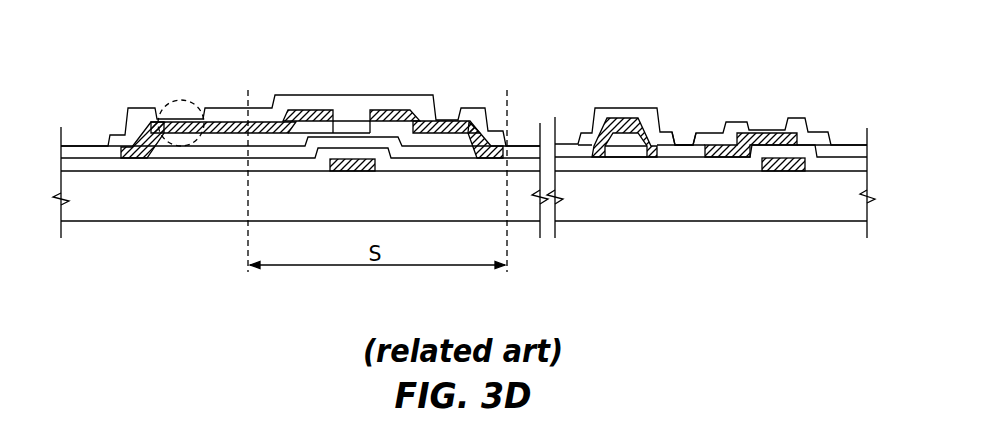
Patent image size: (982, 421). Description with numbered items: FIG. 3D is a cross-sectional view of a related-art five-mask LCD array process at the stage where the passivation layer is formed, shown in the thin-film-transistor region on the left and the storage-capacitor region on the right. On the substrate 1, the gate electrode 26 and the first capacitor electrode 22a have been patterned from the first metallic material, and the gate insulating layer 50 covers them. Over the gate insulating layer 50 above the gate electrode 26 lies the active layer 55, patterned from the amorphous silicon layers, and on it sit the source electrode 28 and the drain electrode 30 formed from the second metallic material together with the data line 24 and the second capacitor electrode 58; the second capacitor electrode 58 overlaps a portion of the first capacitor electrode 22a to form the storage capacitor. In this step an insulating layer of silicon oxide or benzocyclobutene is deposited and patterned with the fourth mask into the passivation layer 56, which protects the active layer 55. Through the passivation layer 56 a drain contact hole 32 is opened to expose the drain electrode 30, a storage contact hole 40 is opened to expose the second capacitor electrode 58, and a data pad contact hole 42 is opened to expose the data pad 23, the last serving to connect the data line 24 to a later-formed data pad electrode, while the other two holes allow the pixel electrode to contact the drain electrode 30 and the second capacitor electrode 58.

The substrate 1 is at (217, 205).
The gate insulating layer 50 is at (95, 163).
The active layer 55 is at (420, 153).
The gate electrode 26 is at (340, 165).
The first capacitor electrode 22a is at (790, 162).
The data line 24 is at (225, 122).
The data pad 23 is at (158, 116).
The data pad contact hole 42 is at (177, 112).
The source electrode 28 is at (320, 112).
The drain electrode 30 is at (395, 112).
The drain contact hole 32 is at (447, 110).
The second capacitor electrode 58 is at (796, 133).
The passivation layer 56 is at (352, 120).
The storage contact hole 40 is at (768, 124).